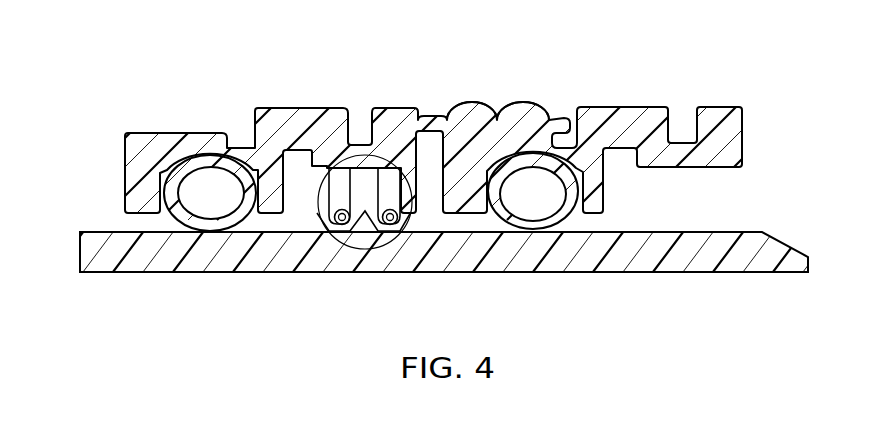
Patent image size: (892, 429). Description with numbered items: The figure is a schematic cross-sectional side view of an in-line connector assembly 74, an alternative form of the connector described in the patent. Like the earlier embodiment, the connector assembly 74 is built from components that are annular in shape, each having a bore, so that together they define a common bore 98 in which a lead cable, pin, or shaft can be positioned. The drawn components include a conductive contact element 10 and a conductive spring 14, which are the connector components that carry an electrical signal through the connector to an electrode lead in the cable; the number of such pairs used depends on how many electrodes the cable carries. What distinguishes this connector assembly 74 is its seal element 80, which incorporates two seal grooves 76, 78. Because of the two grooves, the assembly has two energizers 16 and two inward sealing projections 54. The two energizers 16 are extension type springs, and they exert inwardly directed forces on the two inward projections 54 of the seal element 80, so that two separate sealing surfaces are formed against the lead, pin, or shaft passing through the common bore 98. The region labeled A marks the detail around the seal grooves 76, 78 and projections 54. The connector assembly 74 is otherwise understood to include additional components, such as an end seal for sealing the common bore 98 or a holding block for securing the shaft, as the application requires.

The in-line connector assembly 74 is at (104, 67).
The conductive contact element 10 is at (171, 128).
The seal element 80 is at (520, 99).
The common bore 98 is at (133, 213).
The conductive spring 14 is at (562, 228).
The energizer 16 is at (328, 222).
The first seal groove 76 is at (338, 167).
The second seal groove 78 is at (392, 167).
The inward sealing projection 54 is at (342, 226).
The detail region A is at (362, 156).